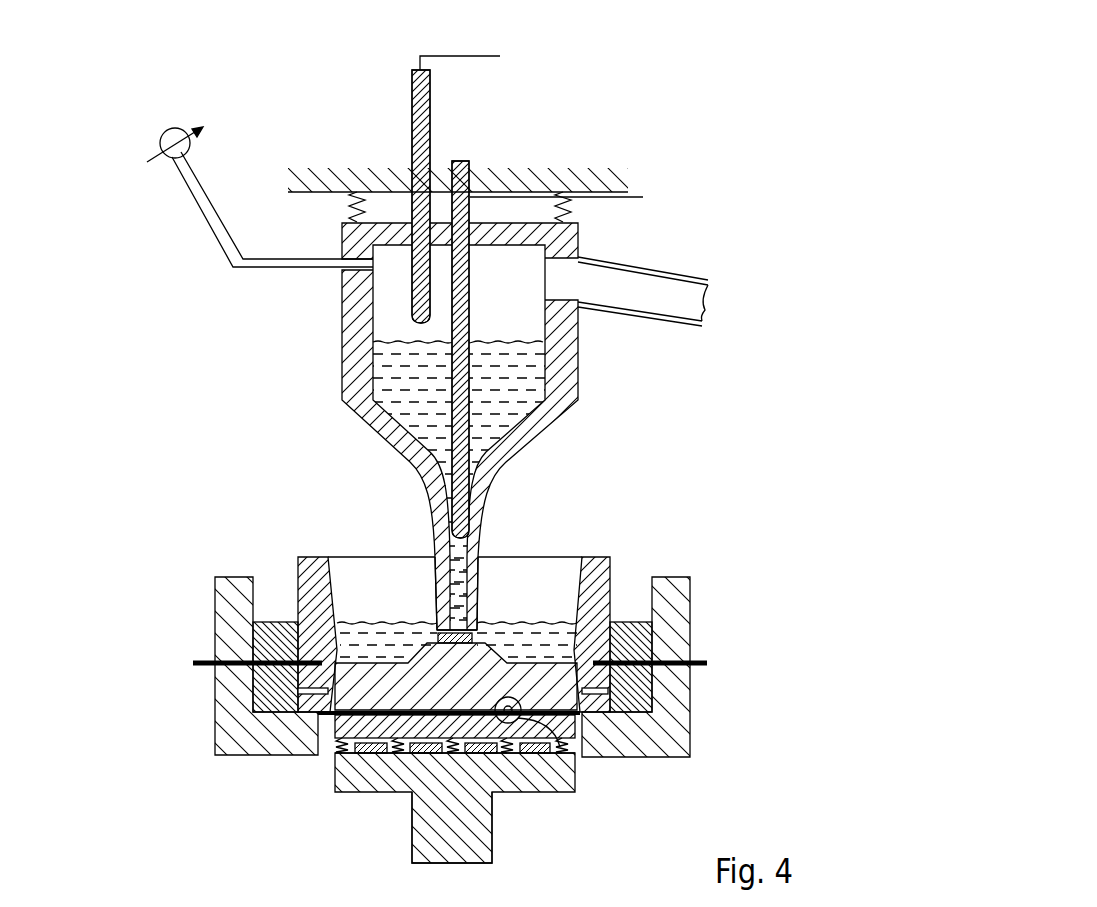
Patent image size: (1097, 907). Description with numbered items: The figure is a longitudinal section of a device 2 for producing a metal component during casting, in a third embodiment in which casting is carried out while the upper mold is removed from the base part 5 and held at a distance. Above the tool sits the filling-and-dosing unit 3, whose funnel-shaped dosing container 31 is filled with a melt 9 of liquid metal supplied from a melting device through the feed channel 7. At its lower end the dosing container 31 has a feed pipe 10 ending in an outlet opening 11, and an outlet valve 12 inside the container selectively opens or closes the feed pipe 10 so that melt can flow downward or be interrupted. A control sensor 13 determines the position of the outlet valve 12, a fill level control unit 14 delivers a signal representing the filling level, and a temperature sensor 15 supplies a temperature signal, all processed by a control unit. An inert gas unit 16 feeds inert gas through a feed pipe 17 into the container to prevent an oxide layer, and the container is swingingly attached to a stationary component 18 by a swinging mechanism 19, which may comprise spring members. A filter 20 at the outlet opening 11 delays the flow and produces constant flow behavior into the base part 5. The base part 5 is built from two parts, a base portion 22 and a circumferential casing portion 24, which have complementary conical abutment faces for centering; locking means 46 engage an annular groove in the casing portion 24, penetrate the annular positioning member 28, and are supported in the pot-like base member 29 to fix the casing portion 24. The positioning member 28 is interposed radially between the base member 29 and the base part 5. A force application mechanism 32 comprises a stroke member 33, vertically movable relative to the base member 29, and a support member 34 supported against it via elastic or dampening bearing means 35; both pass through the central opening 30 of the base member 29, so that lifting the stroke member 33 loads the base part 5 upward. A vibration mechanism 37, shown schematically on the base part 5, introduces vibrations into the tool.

The device 2 is at (636, 82).
The filling-and-dosing unit 3 is at (242, 342).
The base part 5 is at (309, 557).
The feed channel 7 is at (683, 285).
The melt 9 is at (527, 375).
The feed pipe 10 is at (467, 597).
The outlet opening 11 is at (450, 627).
The outlet valve 12 is at (470, 287).
The control sensor 13 is at (638, 192).
The fill level control unit 14 is at (430, 110).
The temperature sensor 15 is at (482, 52).
The inert gas unit 16 is at (170, 127).
The feed pipe 17 is at (202, 205).
The stationary component 18 is at (533, 180).
The swinging mechanism 19 is at (577, 213).
The filter 20 is at (462, 643).
The base portion 22 is at (353, 698).
The casing portion 24 is at (600, 570).
The positioning member 28 is at (265, 643).
The base member 29 is at (225, 600).
The central opening 30 is at (580, 750).
The dosing container 31 is at (340, 303).
The force application mechanism 32 is at (524, 811).
The stroke member 33 is at (423, 838).
The support member 34 is at (370, 742).
The bearing means 35 is at (488, 757).
The vibration mechanism 37 is at (575, 775).
The locking means 46 is at (682, 657).